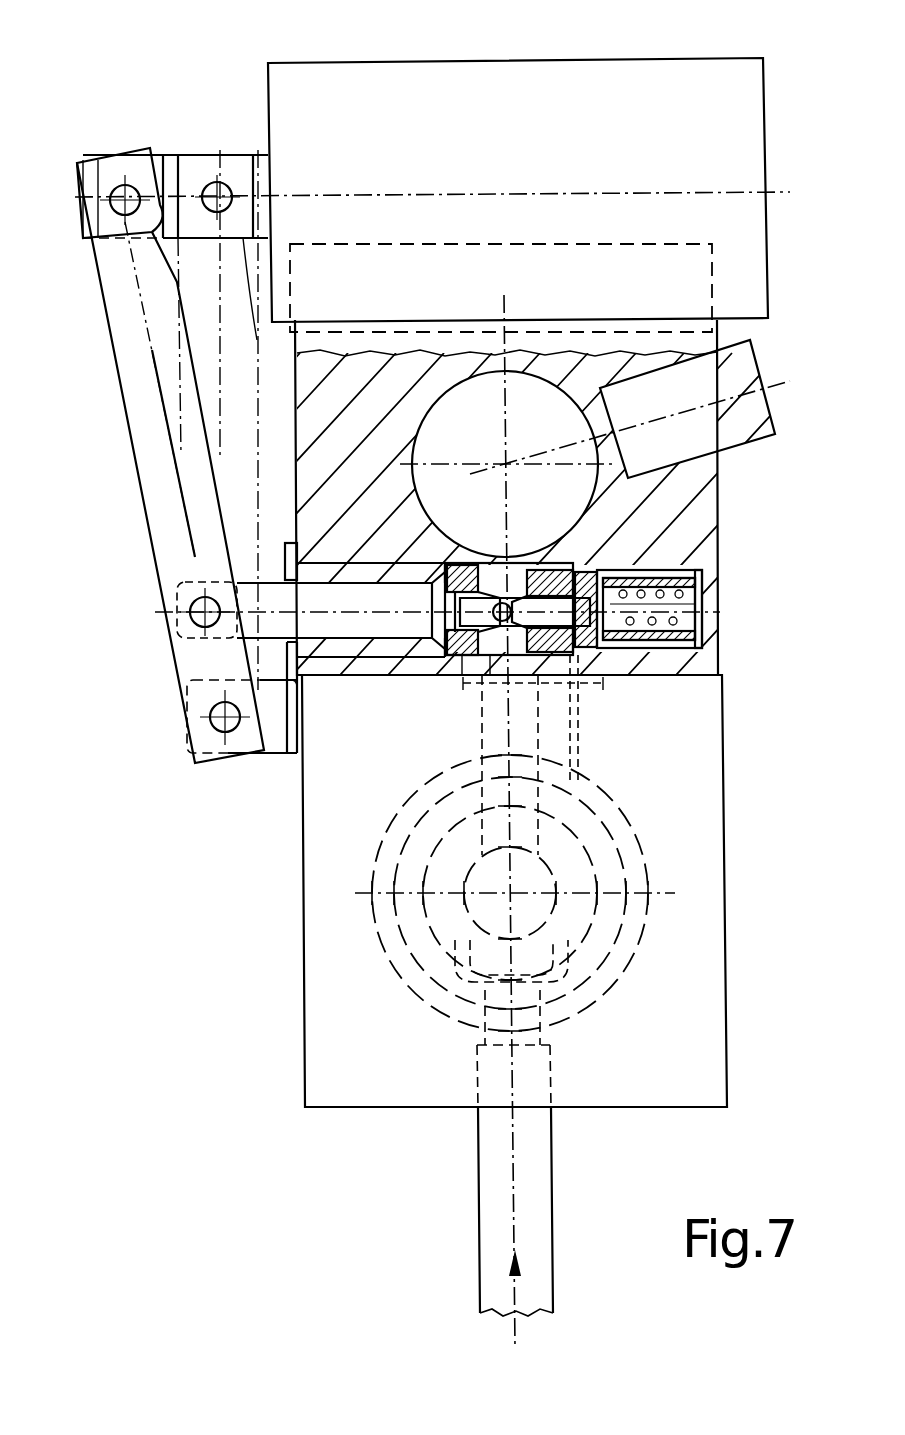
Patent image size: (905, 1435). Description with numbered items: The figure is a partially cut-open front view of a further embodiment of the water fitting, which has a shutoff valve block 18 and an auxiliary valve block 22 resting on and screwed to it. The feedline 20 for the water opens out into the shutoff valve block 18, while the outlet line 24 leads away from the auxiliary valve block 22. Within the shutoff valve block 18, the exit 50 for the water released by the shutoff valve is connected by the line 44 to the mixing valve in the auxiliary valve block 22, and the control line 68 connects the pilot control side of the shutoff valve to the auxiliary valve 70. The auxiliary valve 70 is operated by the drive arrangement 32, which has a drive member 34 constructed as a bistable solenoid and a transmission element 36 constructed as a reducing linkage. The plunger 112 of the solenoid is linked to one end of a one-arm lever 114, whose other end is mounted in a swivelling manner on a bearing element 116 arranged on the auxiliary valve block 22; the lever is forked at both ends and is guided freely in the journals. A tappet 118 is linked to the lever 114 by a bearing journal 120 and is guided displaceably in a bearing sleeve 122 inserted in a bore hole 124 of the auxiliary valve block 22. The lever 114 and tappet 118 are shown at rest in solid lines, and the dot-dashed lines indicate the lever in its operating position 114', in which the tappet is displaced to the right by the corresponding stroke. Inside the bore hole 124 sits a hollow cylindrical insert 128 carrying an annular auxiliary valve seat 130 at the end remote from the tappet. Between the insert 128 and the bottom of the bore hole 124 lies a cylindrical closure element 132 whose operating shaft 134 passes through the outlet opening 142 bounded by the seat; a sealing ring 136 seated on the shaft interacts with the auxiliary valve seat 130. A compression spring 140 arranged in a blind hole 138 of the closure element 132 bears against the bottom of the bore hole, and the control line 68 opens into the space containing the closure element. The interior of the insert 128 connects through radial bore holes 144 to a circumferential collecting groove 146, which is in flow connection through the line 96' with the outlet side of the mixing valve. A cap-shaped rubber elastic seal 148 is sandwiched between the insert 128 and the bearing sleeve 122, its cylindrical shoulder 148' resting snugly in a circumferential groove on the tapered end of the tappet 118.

The shutoff valve block 18 is at (292, 1078).
The feedline 20 is at (482, 1192).
The auxiliary valve block 22 is at (728, 503).
The outlet line 24 is at (746, 421).
The drive arrangement 32 is at (178, 84).
The drive member 34 is at (588, 55).
The transmission element 36 is at (155, 710).
The line 44 is at (470, 828).
The exit 50 is at (430, 975).
The control line 68 is at (596, 768).
The auxiliary valve 70 is at (672, 558).
The line 96' is at (491, 821).
The plunger 112 is at (260, 160).
The one-arm lever 114 is at (152, 463).
The operating position of the lever 114' is at (113, 230).
The bearing element 116 is at (262, 755).
The tappet 118 is at (250, 594).
The bearing journal 120 is at (190, 624).
The bearing sleeve 122 is at (366, 658).
The bore hole 124 is at (410, 660).
The insert 128 is at (497, 687).
The auxiliary valve seat 130 is at (545, 556).
The closure element 132 is at (710, 636).
The operating shaft 134 is at (588, 682).
The sealing ring 136 is at (600, 673).
The blind hole 138 is at (700, 617).
The compression spring 140 is at (700, 600).
The outlet opening 142 is at (548, 570).
The bore holes 144 is at (500, 682).
The collecting groove 146 is at (548, 712).
The seal 148 is at (506, 464).
The cylindrical shoulder 148' is at (476, 562).